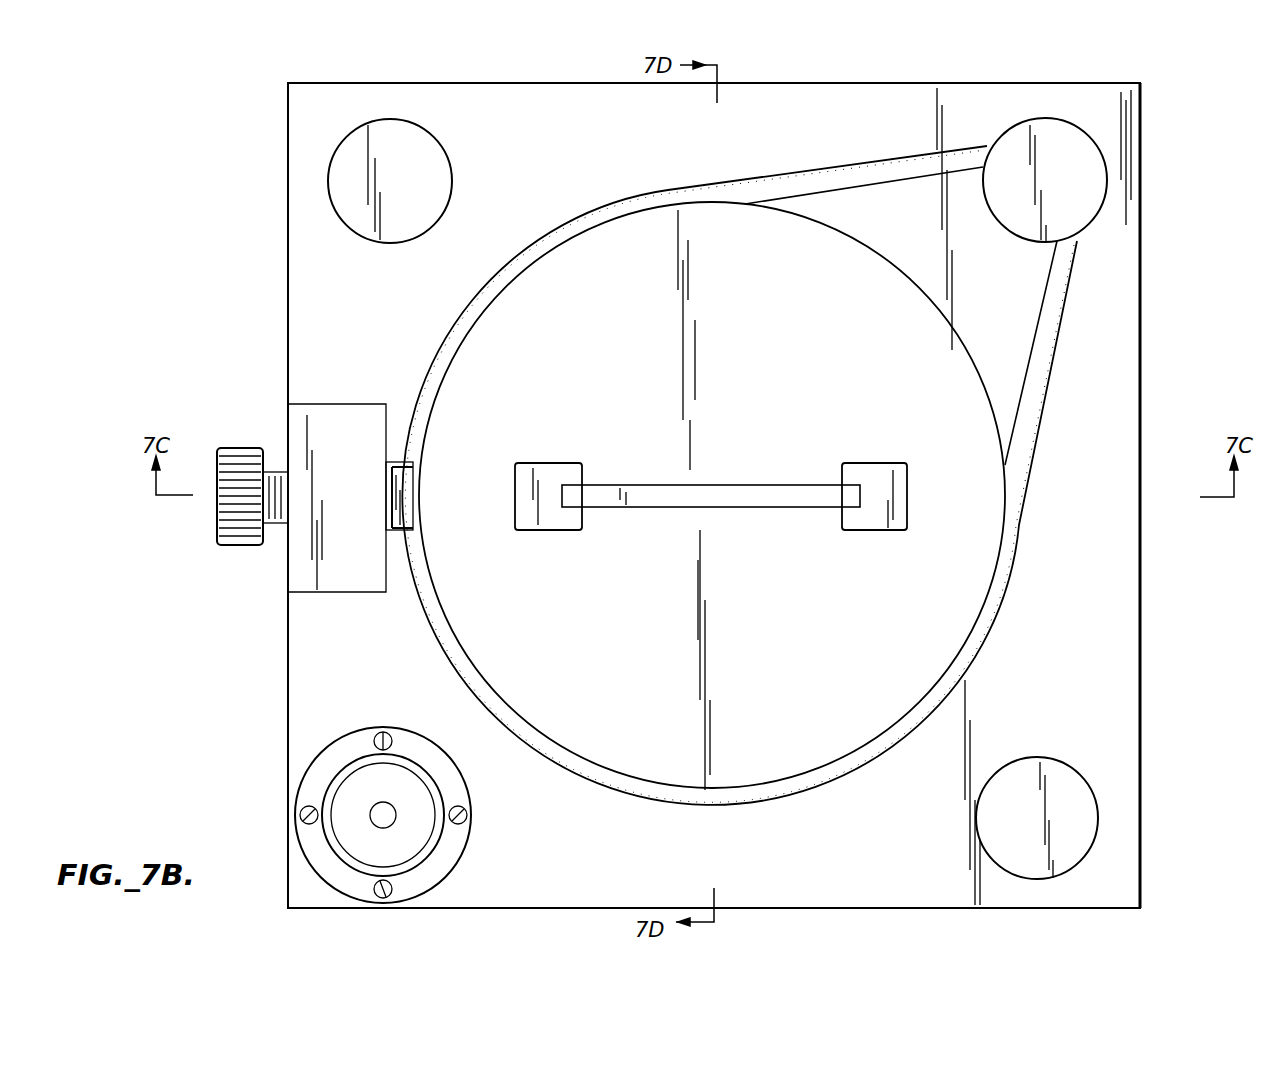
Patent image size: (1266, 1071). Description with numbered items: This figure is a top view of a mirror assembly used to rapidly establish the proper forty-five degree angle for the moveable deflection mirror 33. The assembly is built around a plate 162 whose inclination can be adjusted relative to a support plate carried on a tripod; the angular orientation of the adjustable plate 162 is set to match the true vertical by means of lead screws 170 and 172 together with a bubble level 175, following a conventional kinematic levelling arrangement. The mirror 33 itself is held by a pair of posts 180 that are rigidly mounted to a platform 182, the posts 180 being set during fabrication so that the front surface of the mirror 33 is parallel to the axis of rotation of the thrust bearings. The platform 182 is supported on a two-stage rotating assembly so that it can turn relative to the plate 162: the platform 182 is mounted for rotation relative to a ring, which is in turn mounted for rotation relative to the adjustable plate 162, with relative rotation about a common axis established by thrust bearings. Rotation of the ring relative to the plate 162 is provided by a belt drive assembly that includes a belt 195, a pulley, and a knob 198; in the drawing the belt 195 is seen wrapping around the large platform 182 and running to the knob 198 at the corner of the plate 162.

The plate 162 is at (1060, 684).
The lead screw 170 is at (345, 186).
The lead screw 172 is at (1067, 833).
The bubble level 175 is at (440, 862).
The posts 180 is at (878, 476).
The platform 182 is at (885, 648).
The belt 195 is at (1055, 333).
The knob 198 is at (1085, 191).
The mirror 33 is at (655, 510).